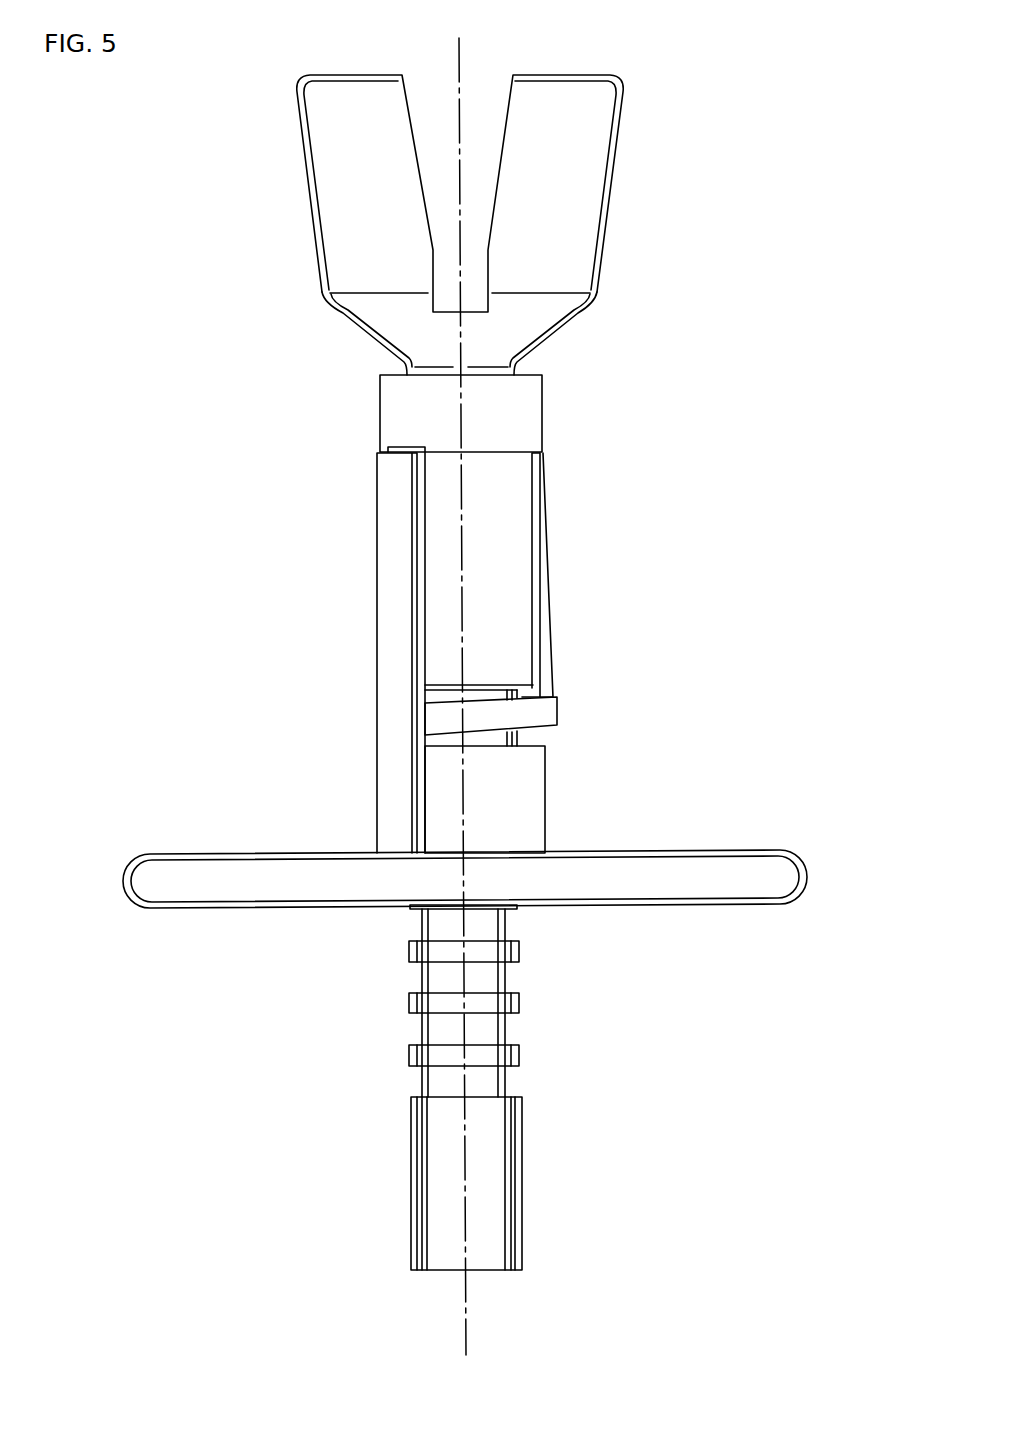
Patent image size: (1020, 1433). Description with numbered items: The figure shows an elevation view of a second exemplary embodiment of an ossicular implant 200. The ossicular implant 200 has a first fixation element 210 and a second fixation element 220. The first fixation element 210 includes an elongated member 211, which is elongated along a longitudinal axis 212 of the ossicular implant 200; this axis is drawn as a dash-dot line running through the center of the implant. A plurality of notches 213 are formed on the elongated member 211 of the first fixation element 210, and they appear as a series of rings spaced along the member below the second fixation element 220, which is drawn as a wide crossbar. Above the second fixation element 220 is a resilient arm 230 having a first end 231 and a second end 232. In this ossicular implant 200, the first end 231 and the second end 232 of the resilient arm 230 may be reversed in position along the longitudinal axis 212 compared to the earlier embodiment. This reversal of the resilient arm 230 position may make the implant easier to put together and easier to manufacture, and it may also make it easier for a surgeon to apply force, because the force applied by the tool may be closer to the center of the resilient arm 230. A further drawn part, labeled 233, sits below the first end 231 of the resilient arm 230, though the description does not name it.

The ossicular implant 200 is at (773, 74).
The first fixation element 210 is at (319, 344).
The elongated member 211 is at (523, 1172).
The longitudinal axis 212 is at (461, 48).
The notches 213 is at (420, 923).
The second fixation element 220 is at (808, 860).
The resilient arm 230 is at (548, 552).
The first end of the resilient arm 231 is at (567, 713).
The second end of the resilient arm 232 is at (551, 373).
The lower block 233 is at (532, 733).